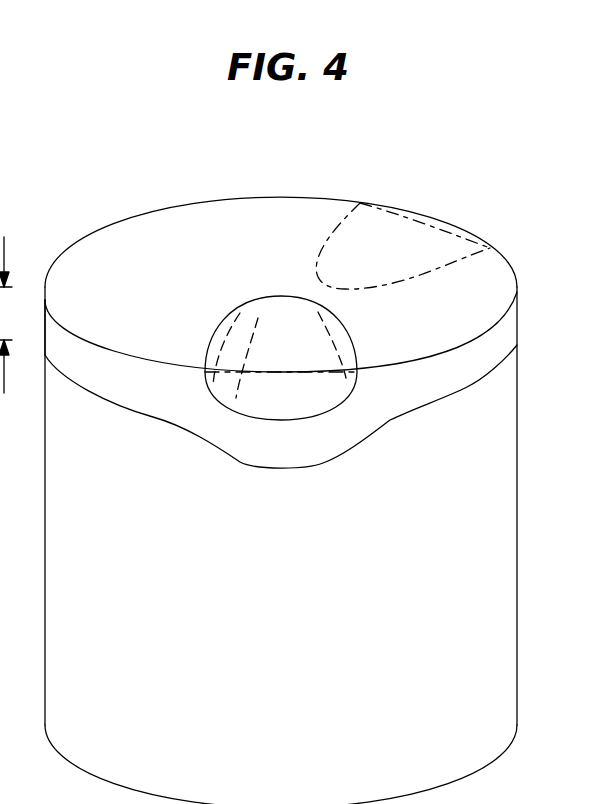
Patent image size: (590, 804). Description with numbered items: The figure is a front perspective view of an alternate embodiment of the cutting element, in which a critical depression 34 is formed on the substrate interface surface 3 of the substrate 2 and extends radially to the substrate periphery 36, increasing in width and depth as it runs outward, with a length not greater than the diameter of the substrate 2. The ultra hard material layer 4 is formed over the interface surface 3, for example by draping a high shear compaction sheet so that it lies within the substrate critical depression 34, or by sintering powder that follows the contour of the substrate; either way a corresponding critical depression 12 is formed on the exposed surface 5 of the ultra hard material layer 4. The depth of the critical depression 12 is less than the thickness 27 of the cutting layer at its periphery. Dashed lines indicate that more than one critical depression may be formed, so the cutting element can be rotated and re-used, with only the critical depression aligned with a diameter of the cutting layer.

The substrate 2 is at (435, 673).
The substrate interface surface 3 is at (83, 392).
The ultra hard material layer 4 is at (497, 345).
The exposed surface 5 is at (173, 232).
The critical depression 12 is at (255, 327).
The thickness of the cutting layer 27 is at (4, 237).
The substrate critical depression 34 is at (350, 452).
The substrate periphery 36 is at (153, 417).